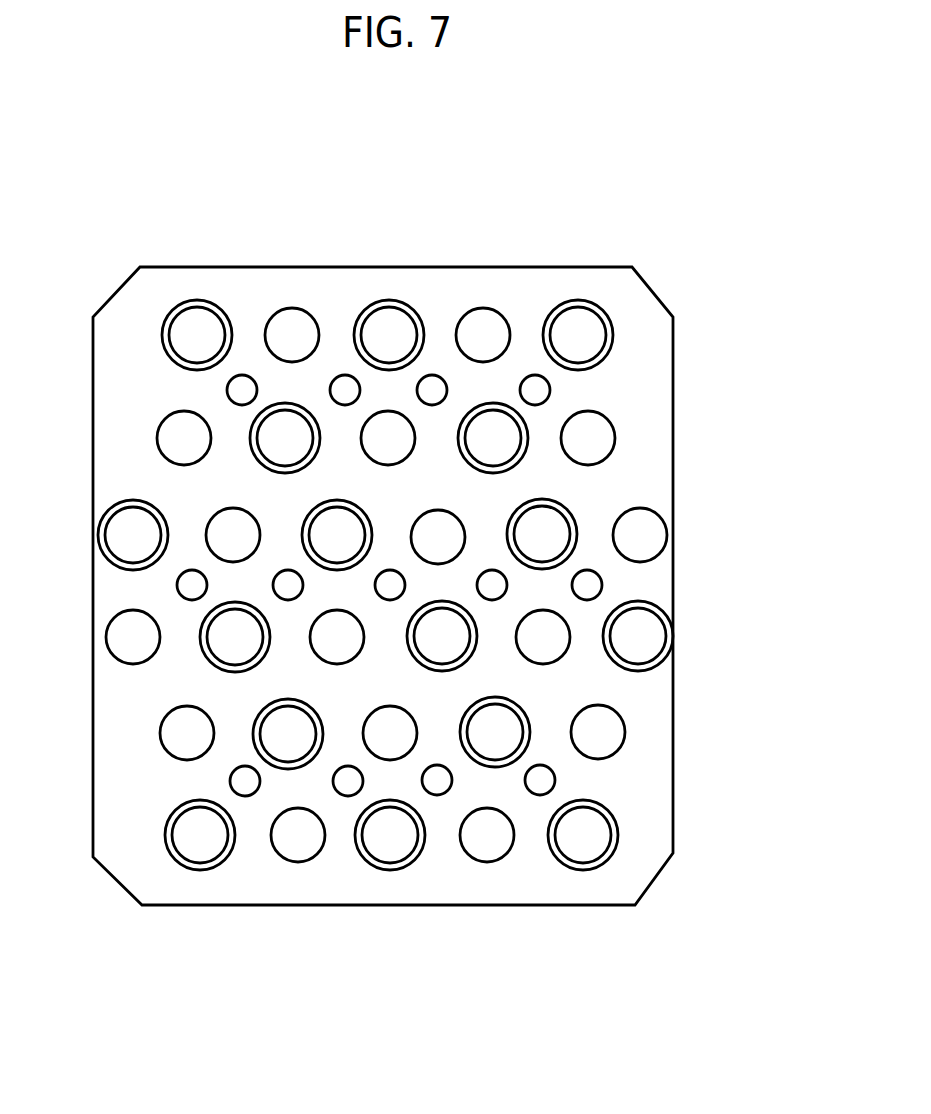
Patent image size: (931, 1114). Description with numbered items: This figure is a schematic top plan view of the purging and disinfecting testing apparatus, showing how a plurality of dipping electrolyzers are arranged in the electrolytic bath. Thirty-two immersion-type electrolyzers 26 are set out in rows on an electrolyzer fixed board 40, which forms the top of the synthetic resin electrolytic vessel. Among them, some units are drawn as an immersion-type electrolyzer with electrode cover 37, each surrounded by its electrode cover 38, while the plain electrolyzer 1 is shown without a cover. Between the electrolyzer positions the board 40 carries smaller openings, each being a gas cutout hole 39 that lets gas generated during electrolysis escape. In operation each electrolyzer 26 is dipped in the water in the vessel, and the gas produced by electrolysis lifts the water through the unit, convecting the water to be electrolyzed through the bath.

The immersion type electrolyzer 1 is at (638, 533).
The immersion-type electrolyzer 26 is at (485, 322).
The immersion type electrolyzer with electrode cover 37 is at (582, 327).
The electrode cover 38 is at (608, 350).
The gas cutout hole 39 is at (343, 382).
The electrolyzer fixed board 40 is at (525, 903).